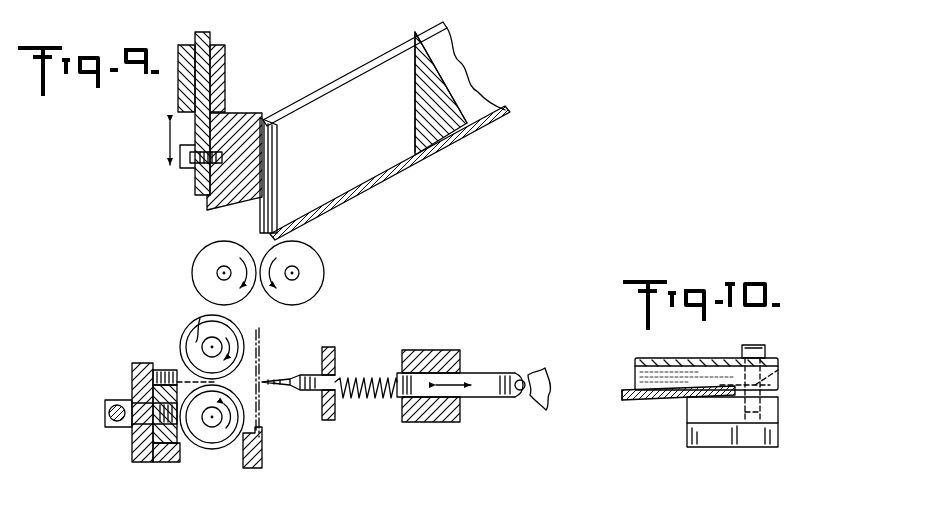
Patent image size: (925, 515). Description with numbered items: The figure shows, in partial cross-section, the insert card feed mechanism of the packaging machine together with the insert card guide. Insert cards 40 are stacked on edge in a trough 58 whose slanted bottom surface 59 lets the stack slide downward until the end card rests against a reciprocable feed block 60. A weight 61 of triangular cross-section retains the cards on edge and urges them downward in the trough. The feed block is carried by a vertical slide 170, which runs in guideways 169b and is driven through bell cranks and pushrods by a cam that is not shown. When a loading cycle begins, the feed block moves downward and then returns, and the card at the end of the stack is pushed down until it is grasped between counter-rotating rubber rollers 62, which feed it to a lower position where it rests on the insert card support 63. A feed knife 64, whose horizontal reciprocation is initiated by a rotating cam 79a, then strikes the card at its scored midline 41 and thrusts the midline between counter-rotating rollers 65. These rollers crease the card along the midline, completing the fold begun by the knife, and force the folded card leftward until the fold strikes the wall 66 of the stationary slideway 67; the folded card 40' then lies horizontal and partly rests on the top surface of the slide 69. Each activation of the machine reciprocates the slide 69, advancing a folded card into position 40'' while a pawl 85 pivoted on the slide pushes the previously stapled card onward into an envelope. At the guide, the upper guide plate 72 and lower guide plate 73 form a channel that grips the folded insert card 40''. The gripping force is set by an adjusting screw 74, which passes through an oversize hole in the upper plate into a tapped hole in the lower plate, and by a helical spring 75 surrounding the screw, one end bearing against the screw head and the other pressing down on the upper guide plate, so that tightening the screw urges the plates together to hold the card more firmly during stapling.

In FIG. 9, the guideways 169b is at (217, 62).
In FIG. 9, the reciprocable feed block 60 is at (232, 117).
In FIG. 9, the vertical slide 170 is at (183, 187).
In FIG. 9, the trough 58 is at (333, 80).
In FIG. 9, the bottom surface 59 is at (375, 170).
In FIG. 9, the weight 61 is at (440, 85).
In FIG. 9, the insert card 40 is at (283, 150).
In FIG. 9, the counter-rotating rubber rollers 62 is at (218, 242).
In FIG. 9, the counter-rotating rollers 65 is at (240, 330).
In FIG. 9, the folded insert card 40' is at (185, 321).
In FIG. 9, the insert card support 63 is at (264, 457).
In FIG. 9, the stationary slideway 67 is at (142, 363).
In FIG. 9, the pawl 85 is at (168, 372).
In FIG. 9, the wall 66 is at (132, 370).
In FIG. 9, the slide 69 is at (166, 462).
In FIG. 9, the feed knife 64 is at (282, 380).
In FIG. 9, the rotating cam 79a is at (540, 370).
In FIG. 10, the upper guide plate 72 is at (668, 358).
In FIG. 10, the insert card in advanced position 40'' is at (678, 409).
In FIG. 10, the midline 41 is at (624, 394).
In FIG. 10, the lower guide plate 73 is at (690, 410).
In FIG. 10, the adjusting screw 74 is at (757, 345).
In FIG. 10, the helical spring 75 is at (778, 368).